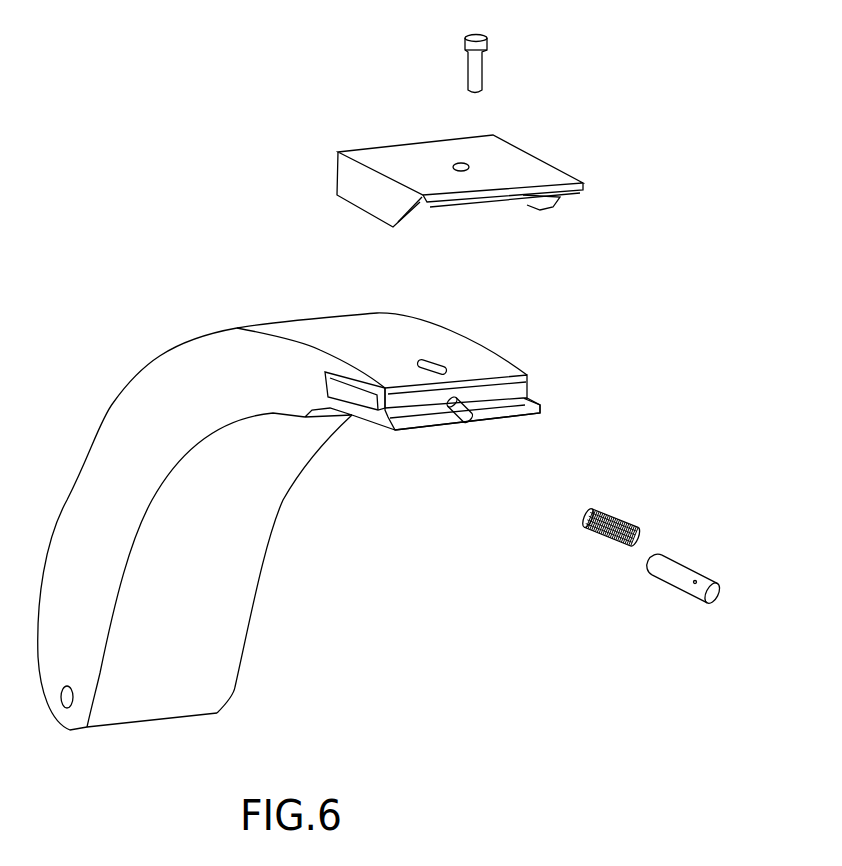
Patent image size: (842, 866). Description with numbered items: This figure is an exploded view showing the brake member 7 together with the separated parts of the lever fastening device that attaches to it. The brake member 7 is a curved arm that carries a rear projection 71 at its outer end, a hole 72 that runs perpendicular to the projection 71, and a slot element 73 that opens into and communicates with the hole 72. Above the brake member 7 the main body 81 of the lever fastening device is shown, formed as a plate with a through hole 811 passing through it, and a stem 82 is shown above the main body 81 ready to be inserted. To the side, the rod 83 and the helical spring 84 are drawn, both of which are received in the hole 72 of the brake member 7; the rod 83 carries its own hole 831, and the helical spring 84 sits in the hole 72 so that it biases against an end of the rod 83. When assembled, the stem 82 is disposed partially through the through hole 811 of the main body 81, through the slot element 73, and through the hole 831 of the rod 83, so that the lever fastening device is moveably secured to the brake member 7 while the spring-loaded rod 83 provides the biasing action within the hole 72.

The brake member 7 is at (113, 403).
The rear projection 71 is at (522, 410).
The hole 72 is at (460, 417).
The slot element 73 is at (440, 368).
The main body 81 is at (515, 163).
The through hole 811 is at (455, 165).
The stem 82 is at (483, 72).
The rod 83 is at (773, 546).
The hole 831 is at (695, 582).
The helical spring 84 is at (623, 520).